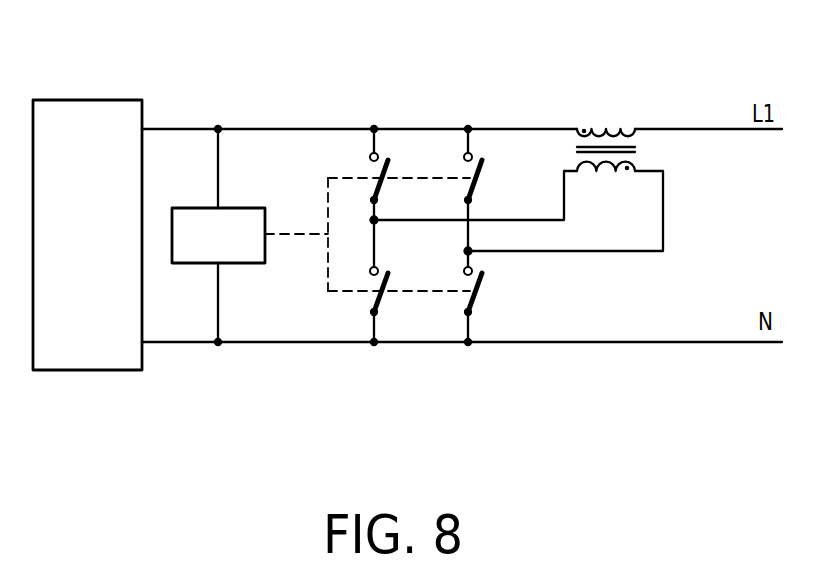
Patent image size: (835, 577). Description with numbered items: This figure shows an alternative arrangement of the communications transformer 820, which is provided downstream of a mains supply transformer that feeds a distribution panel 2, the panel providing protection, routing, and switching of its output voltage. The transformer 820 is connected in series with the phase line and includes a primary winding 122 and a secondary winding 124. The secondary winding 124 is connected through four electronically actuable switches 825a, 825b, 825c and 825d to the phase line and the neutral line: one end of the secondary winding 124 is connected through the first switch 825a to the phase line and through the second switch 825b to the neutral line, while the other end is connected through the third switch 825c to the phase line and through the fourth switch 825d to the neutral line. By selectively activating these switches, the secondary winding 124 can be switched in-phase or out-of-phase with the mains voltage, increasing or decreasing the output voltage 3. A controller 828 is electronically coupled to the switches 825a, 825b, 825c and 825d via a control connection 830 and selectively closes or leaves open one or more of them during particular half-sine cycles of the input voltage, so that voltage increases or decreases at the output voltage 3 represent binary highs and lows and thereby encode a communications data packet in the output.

The distribution panel 2 is at (88, 99).
The communications transformer 820 is at (291, 85).
The controller 828 is at (192, 207).
The control connection 830 is at (328, 180).
The actuable switch 825a is at (388, 165).
The actuable switch 825b is at (381, 300).
The actuable switch 825c is at (482, 165).
The actuable switch 825d is at (475, 300).
The primary winding 122 is at (600, 130).
The secondary winding 124 is at (634, 168).
The output voltage 3 is at (690, 224).